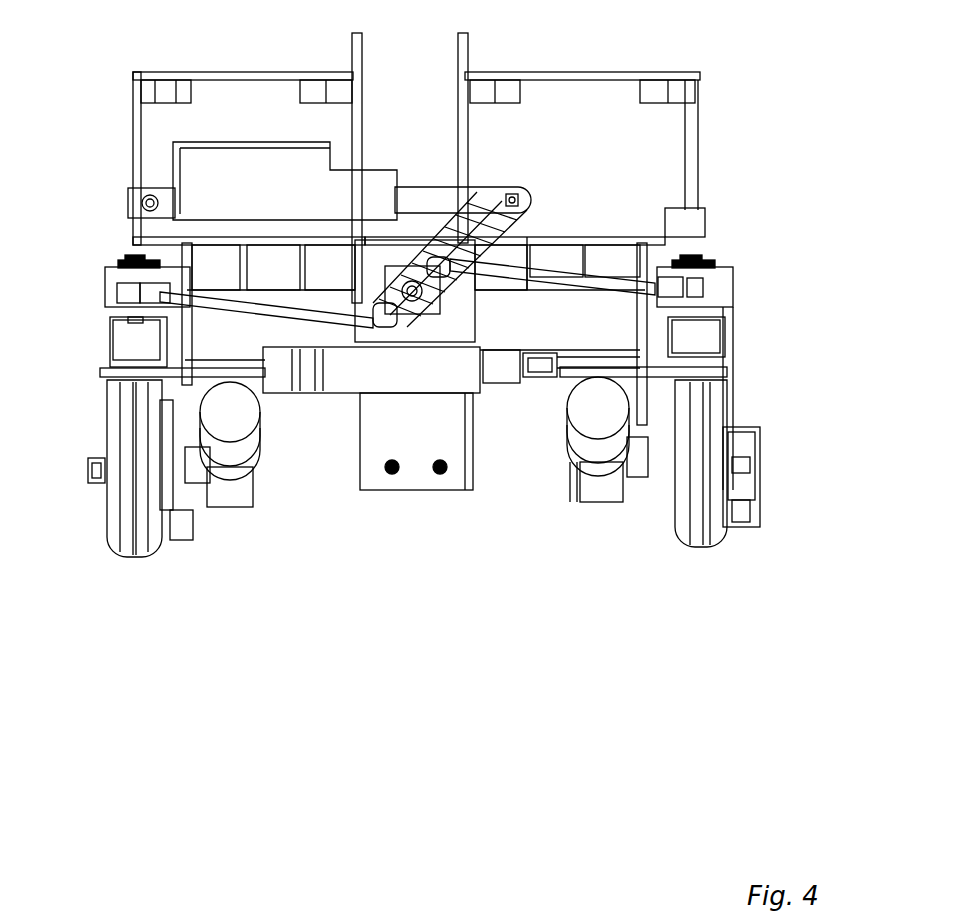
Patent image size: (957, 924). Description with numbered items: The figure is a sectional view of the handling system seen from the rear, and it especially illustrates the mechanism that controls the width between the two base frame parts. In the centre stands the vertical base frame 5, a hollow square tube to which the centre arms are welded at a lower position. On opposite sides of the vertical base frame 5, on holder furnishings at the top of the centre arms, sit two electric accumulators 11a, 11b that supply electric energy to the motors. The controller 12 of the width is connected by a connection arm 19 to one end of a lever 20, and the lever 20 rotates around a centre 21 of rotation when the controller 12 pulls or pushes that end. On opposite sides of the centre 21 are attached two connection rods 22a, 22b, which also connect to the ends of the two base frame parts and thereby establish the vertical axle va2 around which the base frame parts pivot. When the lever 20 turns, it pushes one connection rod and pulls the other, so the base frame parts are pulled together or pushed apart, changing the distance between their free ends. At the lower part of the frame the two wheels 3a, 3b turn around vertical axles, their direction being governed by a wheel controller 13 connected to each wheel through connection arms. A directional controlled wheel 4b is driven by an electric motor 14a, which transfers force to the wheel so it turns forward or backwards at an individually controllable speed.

The vertical base frame 5 is at (350, 50).
The electric accumulator 11a is at (700, 92).
The electric accumulator 11b is at (133, 135).
The controller 12 is at (343, 165).
The connection arm 19 is at (457, 186).
The lever 20 is at (533, 201).
The centre of rotation 21 is at (395, 276).
The connection rod 22a is at (612, 277).
The connection rod 22b is at (262, 296).
The wheel 3a is at (723, 272).
The wheel 3b is at (106, 278).
The vertical axle va2 is at (100, 372).
The wheel controller 13 is at (328, 398).
The electric motor 14a is at (567, 440).
The directional controlled wheel 4b is at (760, 518).